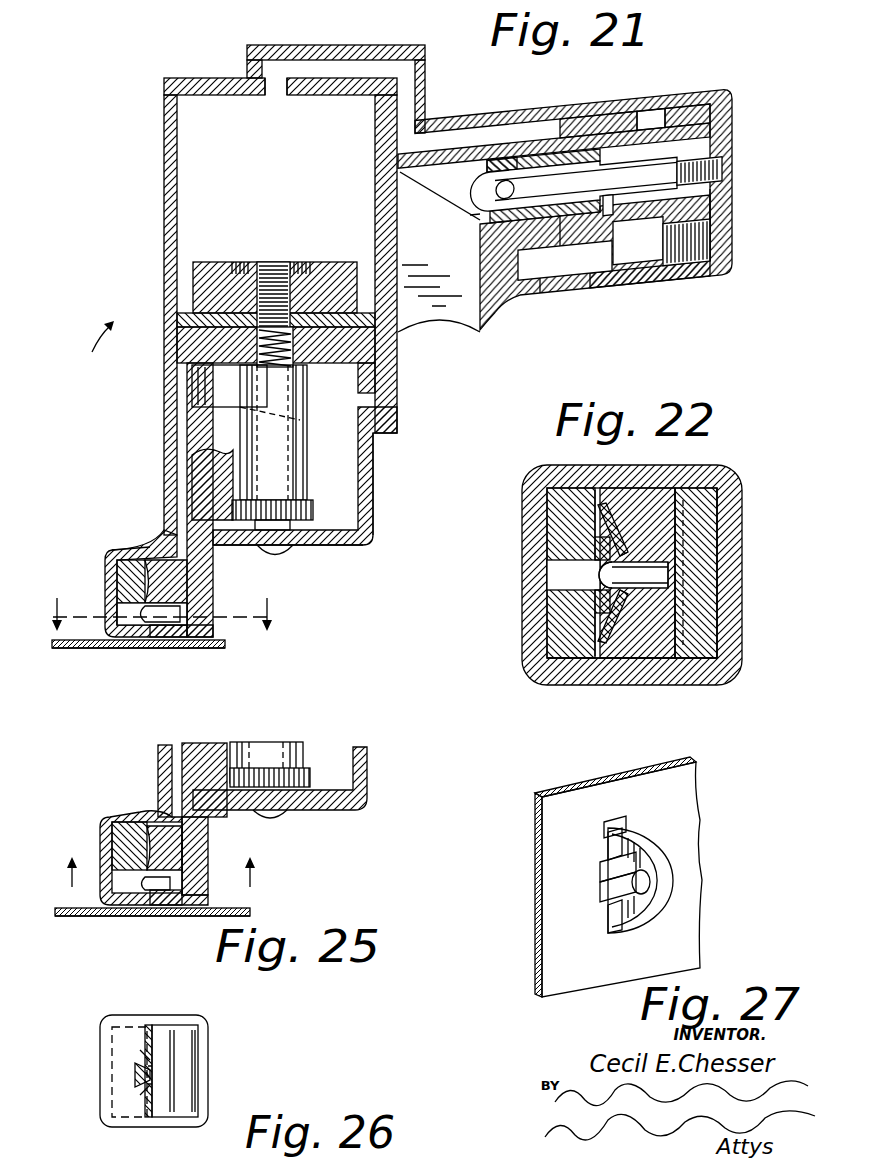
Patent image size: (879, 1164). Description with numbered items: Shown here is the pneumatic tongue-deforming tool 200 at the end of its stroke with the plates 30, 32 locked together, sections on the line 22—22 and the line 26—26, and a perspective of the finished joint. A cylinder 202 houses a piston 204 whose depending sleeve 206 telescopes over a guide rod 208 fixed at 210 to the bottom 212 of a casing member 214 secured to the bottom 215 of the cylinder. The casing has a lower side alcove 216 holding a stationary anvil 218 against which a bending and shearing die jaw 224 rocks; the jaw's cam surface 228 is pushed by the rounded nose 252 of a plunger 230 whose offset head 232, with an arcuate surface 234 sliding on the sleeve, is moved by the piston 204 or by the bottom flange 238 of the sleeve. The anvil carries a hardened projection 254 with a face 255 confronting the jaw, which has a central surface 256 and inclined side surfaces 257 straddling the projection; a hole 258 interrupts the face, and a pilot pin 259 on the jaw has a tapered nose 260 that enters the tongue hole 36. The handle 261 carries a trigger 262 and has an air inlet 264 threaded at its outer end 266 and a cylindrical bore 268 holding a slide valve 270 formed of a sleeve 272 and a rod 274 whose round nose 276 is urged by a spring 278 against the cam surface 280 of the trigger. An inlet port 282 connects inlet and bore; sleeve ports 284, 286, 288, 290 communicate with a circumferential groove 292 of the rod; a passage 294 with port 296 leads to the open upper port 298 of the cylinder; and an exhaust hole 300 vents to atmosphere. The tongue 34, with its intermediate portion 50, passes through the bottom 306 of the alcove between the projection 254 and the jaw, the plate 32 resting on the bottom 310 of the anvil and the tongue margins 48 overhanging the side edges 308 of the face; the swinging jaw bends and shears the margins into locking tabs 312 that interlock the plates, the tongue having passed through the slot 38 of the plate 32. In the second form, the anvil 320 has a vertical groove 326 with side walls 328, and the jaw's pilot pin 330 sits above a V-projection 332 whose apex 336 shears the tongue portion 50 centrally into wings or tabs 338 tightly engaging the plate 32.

In FIG. 21, the tool 200 is at (86, 343).
In FIG. 21, the cylinder 202 is at (164, 198).
In FIG. 21, the piston 204 is at (193, 300).
In FIG. 21, the depending sleeve 206 is at (306, 452).
In FIG. 25, the depending sleeve 206 is at (302, 746).
In FIG. 21, the guide rod 208 is at (308, 546).
In FIG. 25, the guide rod 208 is at (368, 786).
In FIG. 21, the fixing point of guide rod 210 is at (284, 556).
In FIG. 21, the bottom of casing member 212 is at (372, 545).
In FIG. 21, the casing member 214 is at (374, 486).
In FIG. 25, the casing member 214 is at (368, 760).
In FIG. 21, the bottom of cylinder 215 is at (200, 345).
In FIG. 21, the lower side alcove 216 is at (127, 553).
In FIG. 22, the lower side alcove 216 is at (744, 484).
In FIG. 25, the lower side alcove 216 is at (129, 801).
In FIG. 26, the lower side alcove 216 is at (106, 1013).
In FIG. 21, the stationary die block or anvil 218 is at (118, 556).
In FIG. 22, the stationary die block or anvil 218 is at (565, 505).
In FIG. 21, the movable bending and shearing die jaw 224 is at (205, 600).
In FIG. 22, the movable bending and shearing die jaw 224 is at (625, 660).
In FIG. 22, the lower surface of die jaw 228 is at (735, 505).
In FIG. 21, the plunger 230 is at (205, 482).
In FIG. 21, the upper laterally offset head 232 is at (200, 320).
In FIG. 21, the arcuate surface 234 is at (300, 424).
In FIG. 21, the bottom flange of sleeve 238 is at (310, 505).
In FIG. 21, the rounded bottom nose 252 is at (200, 632).
In FIG. 22, the rounded bottom nose 252 is at (713, 610).
In FIG. 25, the rounded bottom nose 252 is at (200, 900).
In FIG. 26, the rounded bottom nose 252 is at (190, 1080).
In FIG. 21, the intermediate hardened projection 254 is at (126, 585).
In FIG. 22, the intermediate hardened projection 254 is at (602, 553).
In FIG. 22, the anvil face 255 is at (700, 548).
In FIG. 22, the central surface of jaw 256 is at (600, 612).
In FIG. 22, the inclined side surfaces 257 is at (600, 530).
In FIG. 21, the anvil hole 258 is at (136, 627).
In FIG. 22, the anvil hole 258 is at (565, 563).
In FIG. 21, the pilot pin 259 is at (160, 624).
In FIG. 22, the pilot pin 259 is at (670, 576).
In FIG. 21, the tapered nose of pilot pin 260 is at (150, 630).
In FIG. 22, the tapered nose of pilot pin 260 is at (590, 575).
In FIG. 21, the handle 261 is at (700, 87).
In FIG. 21, the trigger control 262 is at (452, 328).
In FIG. 21, the compressed air inlet 264 is at (655, 258).
In FIG. 21, the threaded outer end 266 is at (688, 255).
In FIG. 21, the cylindrical bore 268 is at (712, 140).
In FIG. 21, the slide valve 270 is at (520, 160).
In FIG. 21, the valve sleeve 272 is at (486, 246).
In FIG. 21, the valve rod 274 is at (712, 210).
In FIG. 21, the round nose 276 is at (495, 216).
In FIG. 21, the spring 278 is at (706, 190).
In FIG. 21, the inclined cam surface 280 is at (472, 200).
In FIG. 21, the inlet port 282 is at (615, 222).
In FIG. 21, the sleeve port 284 is at (570, 232).
In FIG. 21, the valve exhaust port 286 is at (565, 260).
In FIG. 21, the valve opening 288 is at (616, 125).
In FIG. 21, the sleeve port 290 is at (548, 165).
In FIG. 21, the circumferential groove 292 is at (562, 285).
In FIG. 21, the handle passage 294 is at (652, 118).
In FIG. 21, the handle port 296 is at (567, 150).
In FIG. 21, the open upper port of cylinder 298 is at (276, 96).
In FIG. 21, the exhaust hole 300 is at (482, 214).
In FIG. 21, the bottom of alcove 306 is at (192, 640).
In FIG. 22, the side edges of anvil face 308 is at (618, 533).
In FIG. 21, the bottom of anvil 310 is at (160, 634).
In FIG. 21, the locking tabs 312 is at (257, 340).
In FIG. 22, the locking tabs 312 is at (617, 512).
In FIG. 25, the anvil 320 is at (130, 830).
In FIG. 25, the vertical groove 326 is at (142, 895).
In FIG. 26, the vertical groove 326 is at (143, 1080).
In FIG. 26, the side walls of groove 328 is at (143, 1060).
In FIG. 25, the pilot pin 330 is at (160, 905).
In FIG. 26, the pilot pin 330 is at (175, 1055).
In FIG. 26, the V-projection 332 is at (160, 1072).
In FIG. 26, the apex of V-projection 336 is at (138, 1073).
In FIG. 26, the wings or tabs 338 is at (143, 1066).
In FIG. 27, the wings or tabs 338 is at (603, 881).
In FIG. 21, the section line 22— 22 is at (169, 612).
In FIG. 25, the section line 26— 26 is at (162, 874).
In FIG. 21, the plate 30 is at (62, 648).
In FIG. 25, the plate 30 is at (74, 917).
In FIG. 27, the plate 30 is at (538, 978).
In FIG. 21, the plate 32 is at (92, 641).
In FIG. 25, the plate 32 is at (94, 908).
In FIG. 27, the plate 32 is at (548, 998).
In FIG. 22, the tongue 34 is at (672, 548).
In FIG. 27, the tongue 34 is at (662, 868).
In FIG. 27, the tongue hole 36 is at (650, 885).
In FIG. 27, the slot 38 is at (622, 825).
In FIG. 27, the side margins of tongue 48 is at (625, 837).
In FIG. 22, the intermediate portion of tongue 50 is at (620, 590).
In FIG. 27, the intermediate portion of tongue 50 is at (612, 862).